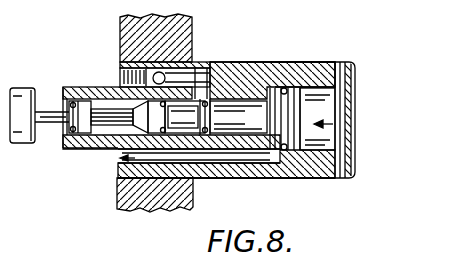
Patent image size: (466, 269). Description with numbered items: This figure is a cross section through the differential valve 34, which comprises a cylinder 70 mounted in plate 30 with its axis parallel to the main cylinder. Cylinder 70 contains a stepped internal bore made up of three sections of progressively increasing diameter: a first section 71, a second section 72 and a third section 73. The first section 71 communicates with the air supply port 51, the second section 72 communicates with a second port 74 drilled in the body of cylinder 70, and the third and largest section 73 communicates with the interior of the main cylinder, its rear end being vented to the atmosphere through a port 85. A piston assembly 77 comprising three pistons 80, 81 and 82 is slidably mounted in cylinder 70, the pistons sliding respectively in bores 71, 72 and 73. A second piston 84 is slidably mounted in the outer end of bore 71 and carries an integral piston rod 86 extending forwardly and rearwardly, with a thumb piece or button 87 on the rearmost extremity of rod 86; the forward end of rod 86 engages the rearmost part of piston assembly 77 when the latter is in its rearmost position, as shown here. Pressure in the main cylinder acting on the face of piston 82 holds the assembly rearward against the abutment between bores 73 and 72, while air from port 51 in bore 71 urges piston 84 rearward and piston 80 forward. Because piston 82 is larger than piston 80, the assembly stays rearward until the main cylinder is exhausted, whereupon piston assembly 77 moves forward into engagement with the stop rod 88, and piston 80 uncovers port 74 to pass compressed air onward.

The plate 30 is at (193, 23).
The differential valve 34 is at (282, 62).
The air supply port 51 is at (128, 128).
The cylinder 70 is at (322, 62).
The first bore section 71 is at (112, 87).
The second bore section 72 is at (199, 120).
The third bore section 73 is at (305, 74).
The second port 74 is at (162, 72).
The piston assembly 77 is at (333, 124).
The first piston 80 is at (185, 128).
The second piston 81 is at (238, 126).
The third piston 82 is at (304, 168).
The second piston 84 is at (84, 134).
The vent port 85 is at (118, 175).
The piston rod 86 is at (50, 110).
The thumb piece or button 87 is at (21, 87).
The stop rod 88 is at (340, 107).